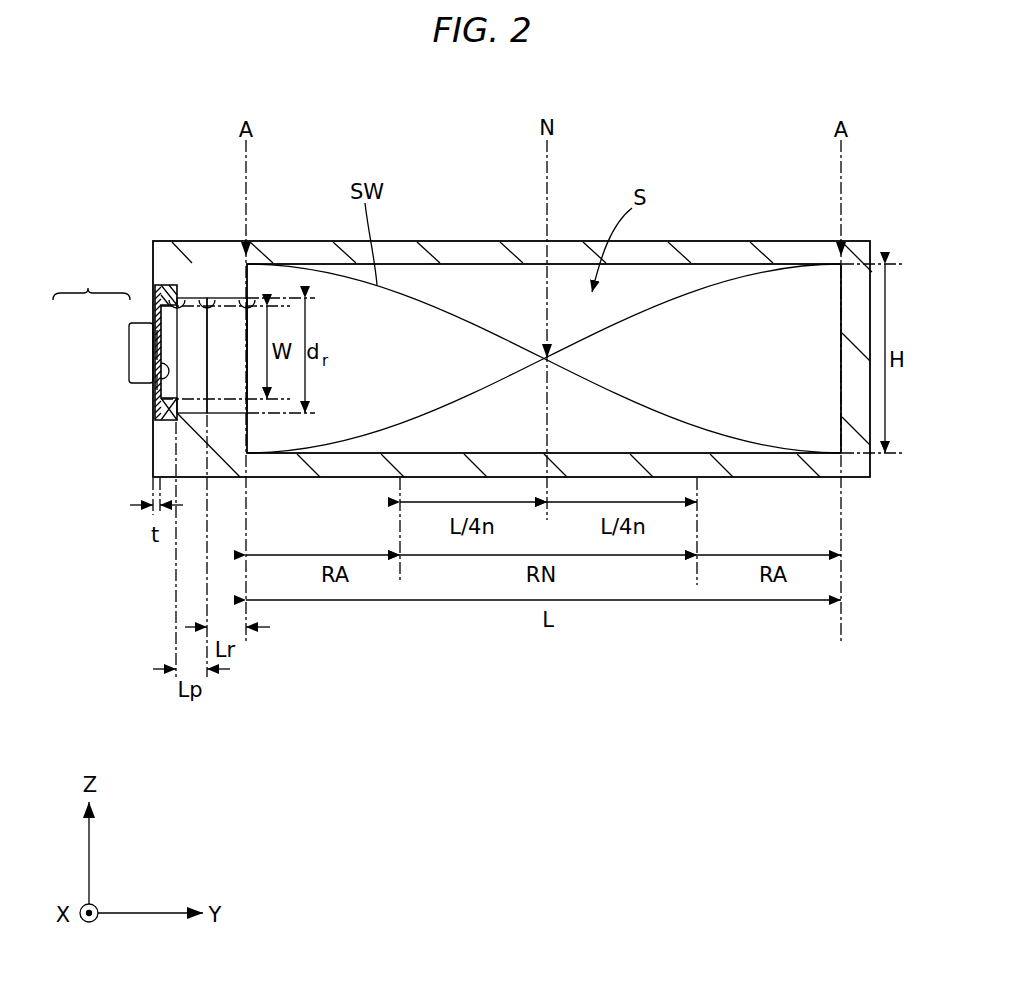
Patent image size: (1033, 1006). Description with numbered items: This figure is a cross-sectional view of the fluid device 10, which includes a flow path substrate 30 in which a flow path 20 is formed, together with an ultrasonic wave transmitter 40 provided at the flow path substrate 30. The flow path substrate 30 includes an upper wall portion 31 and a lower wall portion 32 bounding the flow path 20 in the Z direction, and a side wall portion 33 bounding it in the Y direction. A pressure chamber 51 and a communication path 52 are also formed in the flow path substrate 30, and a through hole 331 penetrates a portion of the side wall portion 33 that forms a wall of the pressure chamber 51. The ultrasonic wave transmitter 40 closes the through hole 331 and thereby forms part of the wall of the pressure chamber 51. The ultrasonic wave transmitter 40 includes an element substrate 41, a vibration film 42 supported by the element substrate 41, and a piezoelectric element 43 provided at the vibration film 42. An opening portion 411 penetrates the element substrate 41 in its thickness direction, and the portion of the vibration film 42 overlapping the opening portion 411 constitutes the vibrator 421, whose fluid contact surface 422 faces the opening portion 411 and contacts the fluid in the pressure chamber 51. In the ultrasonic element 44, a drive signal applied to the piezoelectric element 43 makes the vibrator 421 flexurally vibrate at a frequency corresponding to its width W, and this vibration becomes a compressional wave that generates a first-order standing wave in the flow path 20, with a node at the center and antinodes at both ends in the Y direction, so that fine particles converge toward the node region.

The fluid device 10 is at (120, 122).
The flow path 20 is at (478, 265).
The flow path substrate 30 is at (492, 240).
The upper wall portion 31 is at (738, 253).
The lower wall portion 32 is at (795, 474).
The side wall portion 33 is at (168, 447).
The through hole 331 is at (156, 410).
The ultrasonic wave transmitter 40 is at (78, 210).
The element substrate 41 is at (168, 284).
The opening portion 411 is at (188, 300).
The vibration film 42 is at (152, 291).
The vibrator 421 is at (155, 360).
The fluid contact surface 422 is at (152, 386).
The piezoelectric element 43 is at (139, 348).
The ultrasonic element 44 is at (91, 279).
The pressure chamber 51 is at (218, 295).
The communication path 52 is at (252, 300).